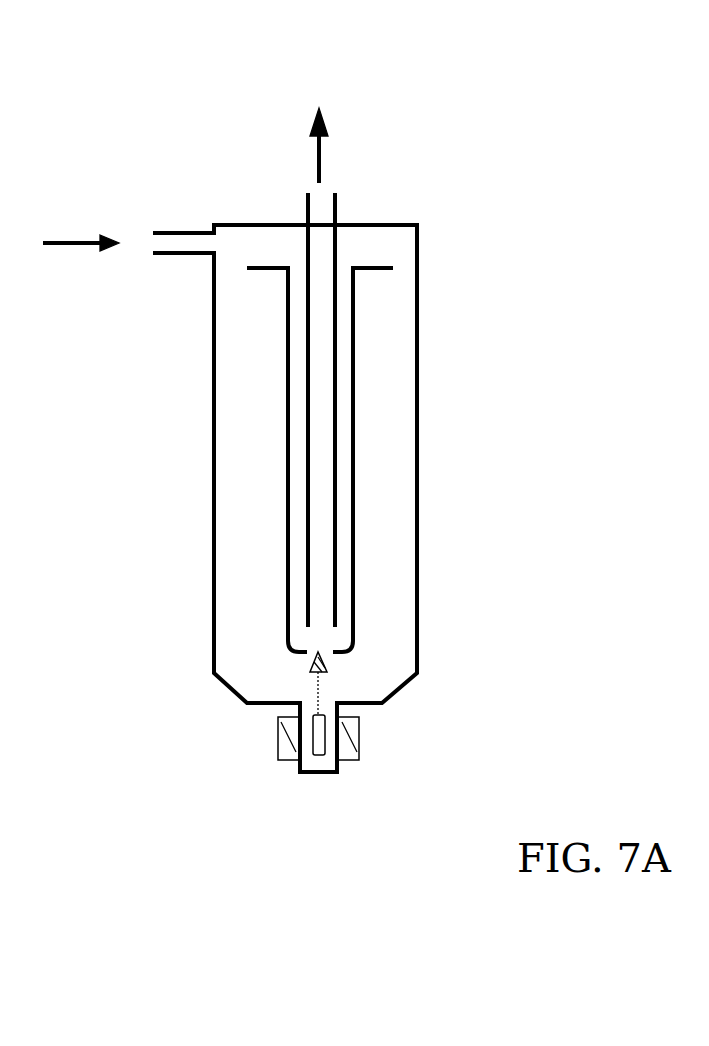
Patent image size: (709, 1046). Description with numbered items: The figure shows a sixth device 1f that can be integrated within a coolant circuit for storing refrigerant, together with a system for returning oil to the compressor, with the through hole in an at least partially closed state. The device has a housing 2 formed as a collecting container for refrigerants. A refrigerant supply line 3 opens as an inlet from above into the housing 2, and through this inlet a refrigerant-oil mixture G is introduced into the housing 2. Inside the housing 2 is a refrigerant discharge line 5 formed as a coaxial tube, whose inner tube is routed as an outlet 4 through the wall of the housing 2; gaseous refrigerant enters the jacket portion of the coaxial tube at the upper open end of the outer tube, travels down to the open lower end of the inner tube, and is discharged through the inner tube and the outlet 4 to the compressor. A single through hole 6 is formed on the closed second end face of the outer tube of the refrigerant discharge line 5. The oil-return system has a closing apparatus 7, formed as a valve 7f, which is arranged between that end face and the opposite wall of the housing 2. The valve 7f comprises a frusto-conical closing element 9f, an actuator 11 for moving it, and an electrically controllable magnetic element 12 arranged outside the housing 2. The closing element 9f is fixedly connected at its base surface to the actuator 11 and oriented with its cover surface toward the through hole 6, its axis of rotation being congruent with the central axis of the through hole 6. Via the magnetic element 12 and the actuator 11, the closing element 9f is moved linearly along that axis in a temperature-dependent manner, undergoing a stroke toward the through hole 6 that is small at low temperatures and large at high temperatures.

The sixth device 1f is at (297, 436).
The housing 2 is at (418, 252).
The refrigerant supply line 3 is at (160, 237).
The outlet 4 is at (337, 200).
The refrigerant discharge line 5 is at (293, 450).
The through hole 6 is at (318, 643).
The closing element 9f is at (312, 662).
The actuator 11 is at (319, 700).
The magnetic element 12 is at (358, 728).
The closing apparatus 7 is at (249, 763).
The valve 7f is at (248, 754).
The refrigerant-oil mixture G is at (98, 237).